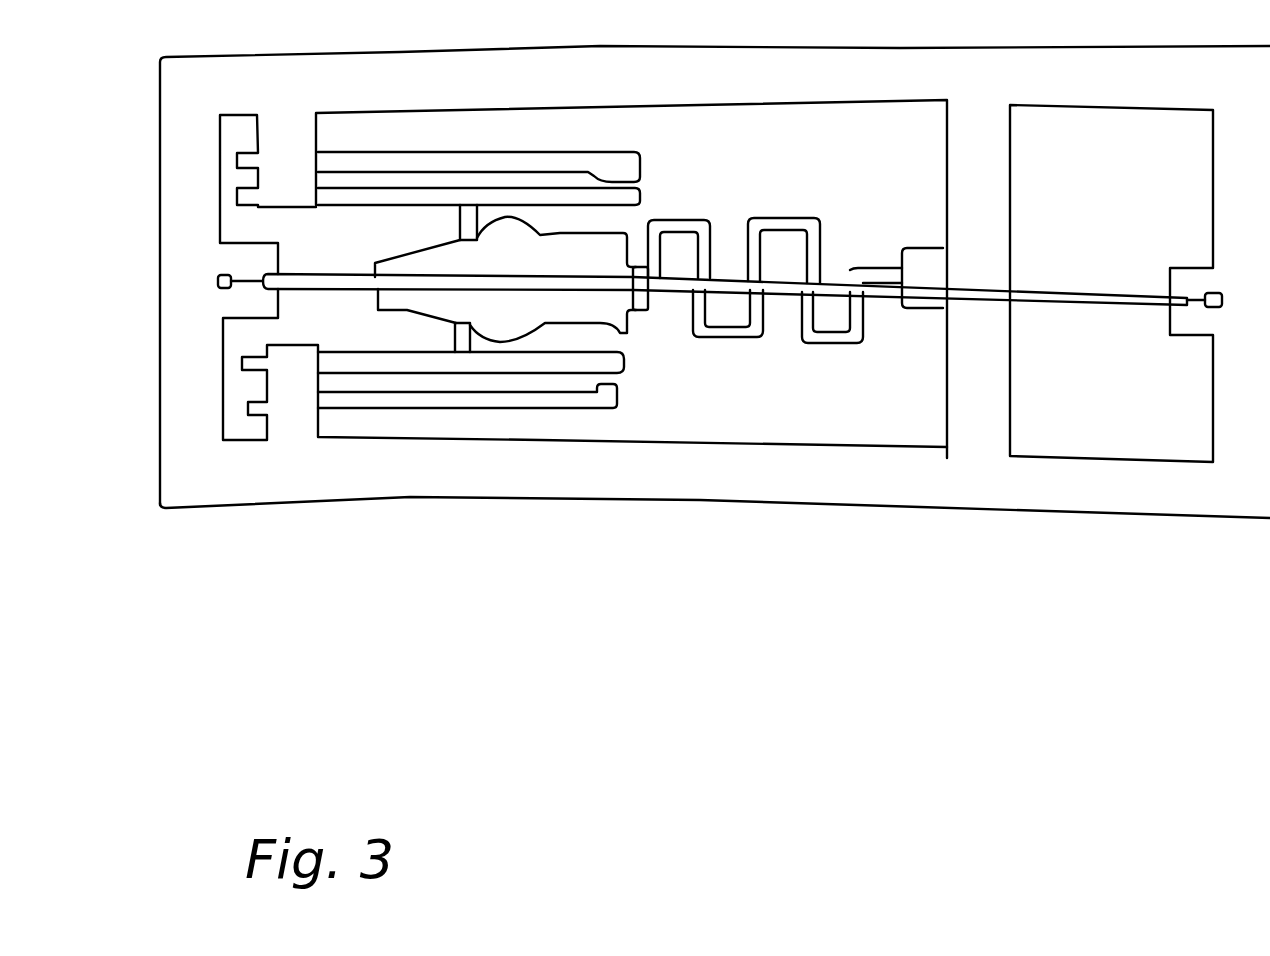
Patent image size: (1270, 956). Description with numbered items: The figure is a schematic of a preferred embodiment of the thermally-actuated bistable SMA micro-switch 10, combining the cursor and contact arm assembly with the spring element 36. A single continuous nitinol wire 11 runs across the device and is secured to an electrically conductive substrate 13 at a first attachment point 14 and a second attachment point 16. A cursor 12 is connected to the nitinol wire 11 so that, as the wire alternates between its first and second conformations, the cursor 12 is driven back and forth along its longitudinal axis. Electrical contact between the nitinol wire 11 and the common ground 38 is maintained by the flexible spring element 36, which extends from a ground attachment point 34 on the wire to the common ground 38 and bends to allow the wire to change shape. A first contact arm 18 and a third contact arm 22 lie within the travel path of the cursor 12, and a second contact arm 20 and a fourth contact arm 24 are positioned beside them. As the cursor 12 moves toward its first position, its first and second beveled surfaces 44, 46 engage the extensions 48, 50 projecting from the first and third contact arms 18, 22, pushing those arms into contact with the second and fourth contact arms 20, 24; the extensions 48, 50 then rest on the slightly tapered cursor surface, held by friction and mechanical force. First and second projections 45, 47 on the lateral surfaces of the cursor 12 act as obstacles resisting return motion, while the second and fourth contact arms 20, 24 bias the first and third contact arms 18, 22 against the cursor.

The bistable SMA micro-switch 10 is at (601, 684).
The nitinol wire 11 is at (1058, 288).
The cursor 12 is at (372, 296).
The substrate 13 is at (862, 34).
The first attachment point 14 is at (253, 275).
The second attachment point 16 is at (1203, 308).
The first contact arm 18 is at (641, 192).
The second contact arm 20 is at (530, 150).
The third contact arm 22 is at (633, 365).
The fourth contact arm 24 is at (618, 397).
The ground attachment point 34 is at (643, 308).
The spring element 36 is at (750, 343).
The common ground 38 is at (934, 244).
The first beveled surface 44 is at (458, 233).
The first projection 45 is at (552, 235).
The second beveled surface 46 is at (455, 328).
The second projection 47 is at (548, 335).
The first contact arm extension 48 is at (455, 217).
The second contact arm extension 50 is at (455, 348).